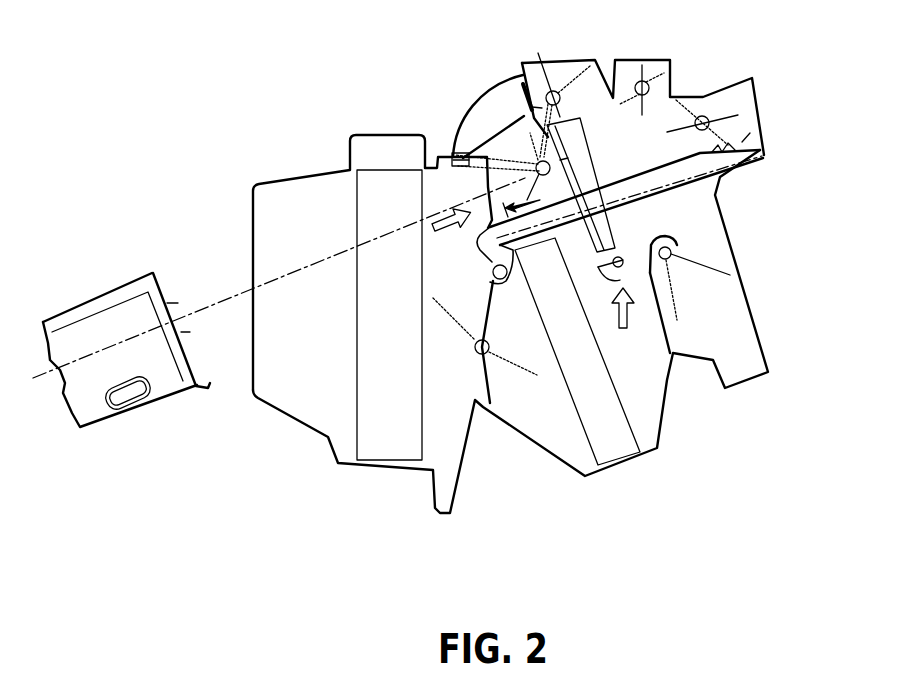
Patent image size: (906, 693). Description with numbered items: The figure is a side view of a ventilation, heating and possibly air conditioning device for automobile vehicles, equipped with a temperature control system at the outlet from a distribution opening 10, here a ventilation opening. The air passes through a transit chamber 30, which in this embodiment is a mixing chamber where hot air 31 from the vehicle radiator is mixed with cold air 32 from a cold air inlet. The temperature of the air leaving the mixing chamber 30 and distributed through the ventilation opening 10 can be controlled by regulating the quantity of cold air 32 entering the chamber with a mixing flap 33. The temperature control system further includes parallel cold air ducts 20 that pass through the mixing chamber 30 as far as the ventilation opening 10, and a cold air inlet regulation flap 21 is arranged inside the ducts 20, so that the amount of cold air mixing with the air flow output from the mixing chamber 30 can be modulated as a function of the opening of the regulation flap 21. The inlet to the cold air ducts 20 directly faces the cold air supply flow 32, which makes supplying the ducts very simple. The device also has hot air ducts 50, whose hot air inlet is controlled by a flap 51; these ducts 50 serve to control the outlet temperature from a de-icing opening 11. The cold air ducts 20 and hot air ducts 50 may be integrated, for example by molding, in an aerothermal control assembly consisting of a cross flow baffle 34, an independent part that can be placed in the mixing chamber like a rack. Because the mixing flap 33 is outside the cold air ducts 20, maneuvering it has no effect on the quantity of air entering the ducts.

The distribution opening 10 is at (760, 118).
The de-icing opening 11 is at (590, 58).
The cold air ducts 20 is at (688, 182).
The cold air inlet regulation flap 21 is at (495, 275).
The transit chamber 30 is at (668, 123).
The hot air 31 is at (625, 330).
The cold air 32 is at (445, 240).
The mixing flap 33 is at (128, 310).
The cross flow baffle 34 is at (588, 141).
The hot air ducts 50 is at (530, 125).
The flap 51 is at (628, 270).